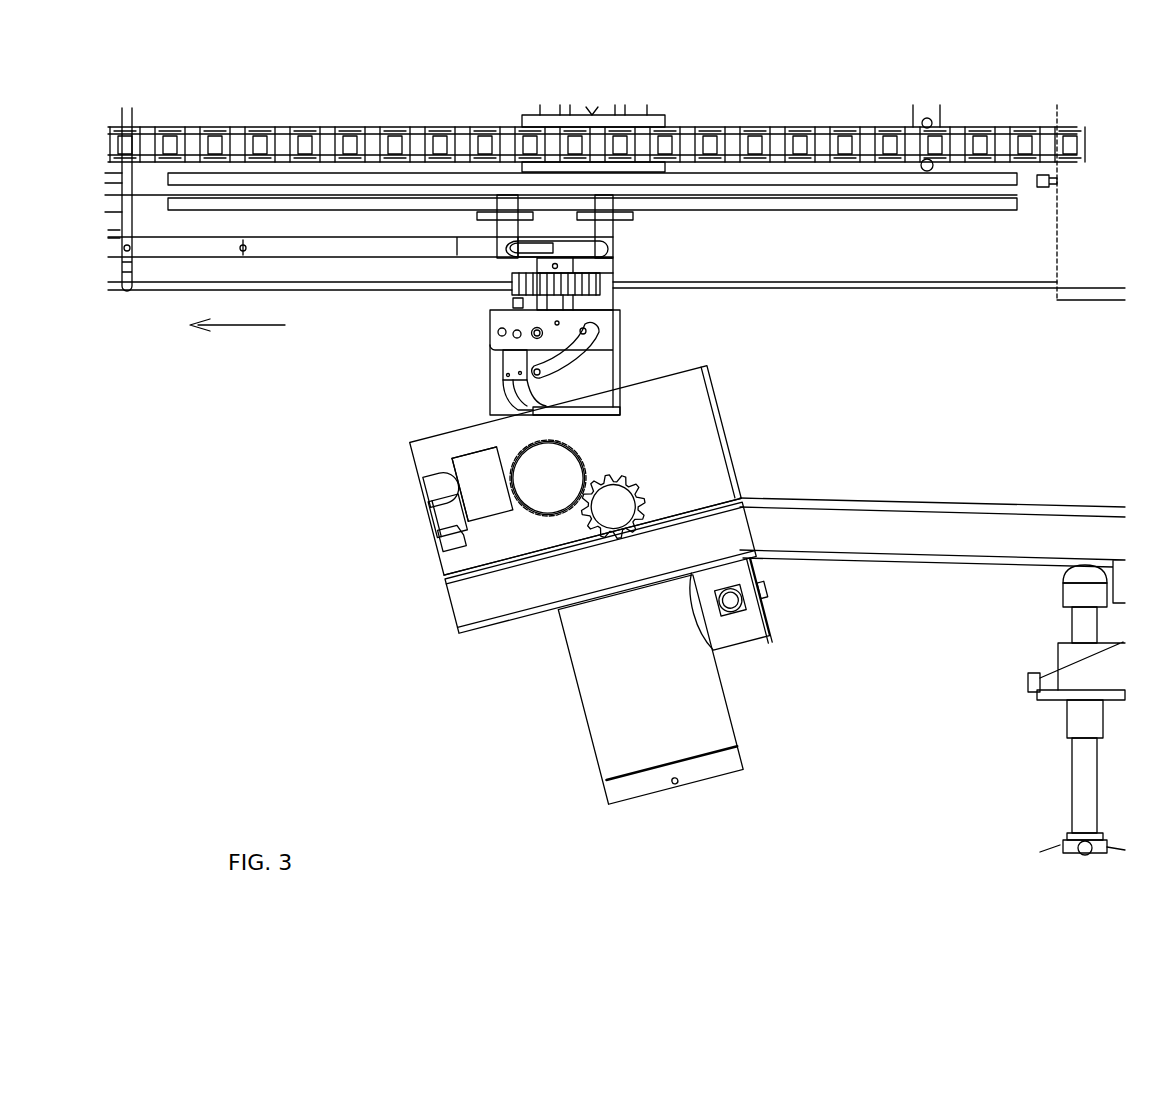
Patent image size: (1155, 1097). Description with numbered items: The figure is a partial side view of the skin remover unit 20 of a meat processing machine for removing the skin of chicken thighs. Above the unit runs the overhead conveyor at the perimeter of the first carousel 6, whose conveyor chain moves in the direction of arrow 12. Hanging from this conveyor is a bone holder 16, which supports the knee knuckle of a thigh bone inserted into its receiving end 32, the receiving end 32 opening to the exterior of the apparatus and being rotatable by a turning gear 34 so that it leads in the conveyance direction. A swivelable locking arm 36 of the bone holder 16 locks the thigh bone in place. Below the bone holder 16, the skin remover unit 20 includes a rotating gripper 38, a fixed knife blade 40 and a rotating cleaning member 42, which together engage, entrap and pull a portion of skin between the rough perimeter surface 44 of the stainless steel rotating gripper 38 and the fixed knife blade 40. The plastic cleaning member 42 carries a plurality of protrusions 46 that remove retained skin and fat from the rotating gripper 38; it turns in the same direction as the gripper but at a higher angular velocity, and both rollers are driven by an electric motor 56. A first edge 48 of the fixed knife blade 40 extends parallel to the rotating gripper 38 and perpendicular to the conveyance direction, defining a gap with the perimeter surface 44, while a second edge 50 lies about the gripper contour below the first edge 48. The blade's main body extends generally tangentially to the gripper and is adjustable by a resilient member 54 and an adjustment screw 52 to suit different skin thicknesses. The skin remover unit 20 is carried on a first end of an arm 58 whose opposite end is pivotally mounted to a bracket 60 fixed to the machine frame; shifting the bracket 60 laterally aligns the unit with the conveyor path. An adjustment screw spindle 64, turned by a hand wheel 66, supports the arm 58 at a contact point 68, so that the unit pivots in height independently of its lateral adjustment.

The first carousel 6 is at (737, 128).
The arrow 12 is at (237, 349).
The bone holder 16 is at (621, 341).
The skin remover unit 20 is at (391, 662).
The receiving end 32 is at (507, 408).
The turning gear 34 is at (512, 298).
The swivelable locking arm 36 is at (505, 388).
The rotating gripper 38 is at (548, 478).
The fixed knife blade 40 is at (453, 477).
The rotating cleaning member 42 is at (613, 507).
The perimeter surface 44 is at (573, 450).
The protrusions 46 is at (635, 482).
The first edge 48 is at (512, 442).
The second edge 50 is at (513, 450).
The adjustment screw 52 is at (457, 485).
The resilient member 54 is at (440, 537).
The electric motor 56 is at (582, 695).
The arm 58 is at (893, 502).
The bracket 60 is at (1073, 683).
The adjustment screw spindle 64 is at (1082, 785).
The hand wheel 66 is at (1057, 850).
The contact point 68 is at (1083, 563).